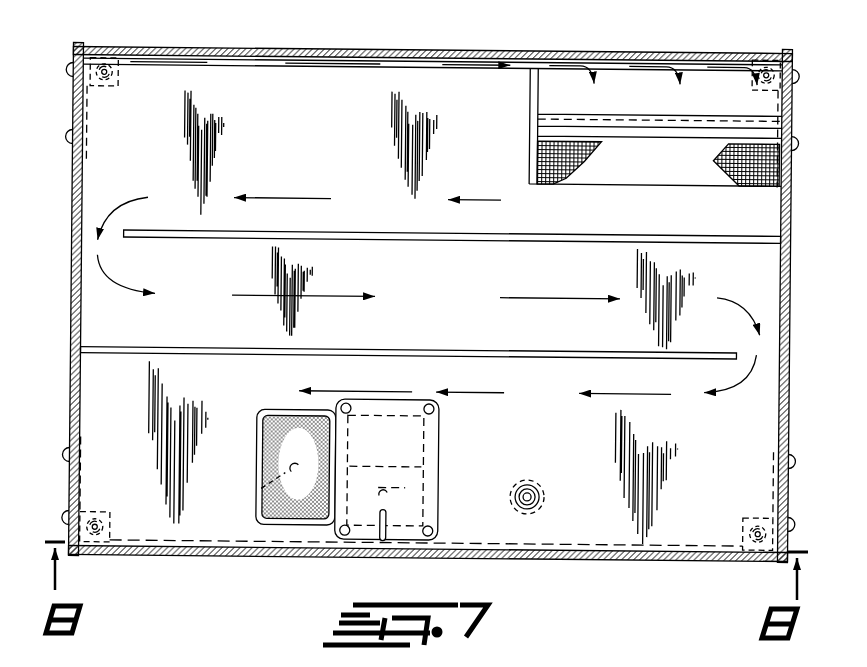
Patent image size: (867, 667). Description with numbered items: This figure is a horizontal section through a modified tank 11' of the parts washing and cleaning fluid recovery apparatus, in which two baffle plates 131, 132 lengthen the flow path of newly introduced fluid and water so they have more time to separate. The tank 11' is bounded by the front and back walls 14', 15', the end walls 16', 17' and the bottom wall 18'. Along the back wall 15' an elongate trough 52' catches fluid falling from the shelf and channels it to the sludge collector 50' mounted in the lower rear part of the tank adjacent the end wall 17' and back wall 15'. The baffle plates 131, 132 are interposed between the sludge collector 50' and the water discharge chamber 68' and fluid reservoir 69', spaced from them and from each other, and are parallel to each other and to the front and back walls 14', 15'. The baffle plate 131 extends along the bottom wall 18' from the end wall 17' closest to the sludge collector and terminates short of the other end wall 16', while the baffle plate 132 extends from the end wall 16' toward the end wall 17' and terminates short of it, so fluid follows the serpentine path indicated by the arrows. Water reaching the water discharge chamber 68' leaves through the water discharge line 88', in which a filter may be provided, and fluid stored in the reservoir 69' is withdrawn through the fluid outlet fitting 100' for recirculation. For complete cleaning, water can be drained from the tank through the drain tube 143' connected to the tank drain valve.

The back wall 15' is at (432, 38).
The trough 52' is at (432, 85).
The sludge collector 50' is at (610, 127).
The bottom wall 18' is at (78, 299).
The end wall 16' is at (60, 298).
The end wall 17' is at (785, 306).
The tank 11' is at (455, 169).
The baffle plate 131 is at (418, 242).
The baffle plate 132 is at (417, 349).
The fluid reservoir 69' is at (272, 467).
The fluid outlet fitting 100' is at (254, 482).
The water discharge chamber 68' is at (427, 470).
The water discharge line 88' is at (435, 505).
The drain tube 143' is at (559, 492).
The front wall 14' is at (427, 565).